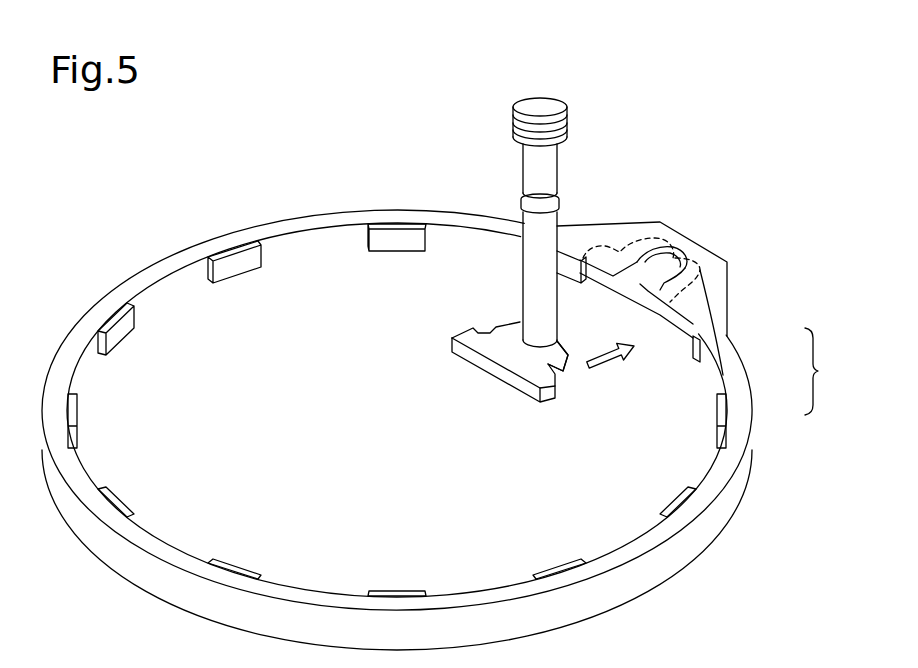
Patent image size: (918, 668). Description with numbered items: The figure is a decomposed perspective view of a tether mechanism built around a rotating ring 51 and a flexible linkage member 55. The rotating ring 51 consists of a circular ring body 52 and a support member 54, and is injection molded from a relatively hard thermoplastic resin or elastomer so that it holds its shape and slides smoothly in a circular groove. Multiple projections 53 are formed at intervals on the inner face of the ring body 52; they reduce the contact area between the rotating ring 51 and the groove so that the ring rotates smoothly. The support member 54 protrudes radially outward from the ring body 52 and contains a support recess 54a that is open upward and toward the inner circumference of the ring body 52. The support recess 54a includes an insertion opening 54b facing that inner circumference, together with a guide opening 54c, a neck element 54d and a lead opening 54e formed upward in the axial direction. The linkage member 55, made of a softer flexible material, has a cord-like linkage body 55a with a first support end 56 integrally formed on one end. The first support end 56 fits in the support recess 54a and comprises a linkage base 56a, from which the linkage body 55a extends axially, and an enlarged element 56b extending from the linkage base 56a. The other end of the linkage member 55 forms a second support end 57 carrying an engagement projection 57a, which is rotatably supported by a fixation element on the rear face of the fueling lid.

The rotating ring 51 is at (829, 371).
The ring body 52 is at (733, 415).
The projections 53 is at (247, 243).
The support member 54 is at (680, 310).
The support recess 54a is at (640, 278).
The insertion opening 54b is at (657, 278).
The guide opening 54c is at (693, 279).
The neck element 54d is at (687, 258).
The lead opening 54e is at (670, 246).
The linkage member 55 is at (492, 279).
The linkage body 55a is at (537, 310).
The first support end 56 is at (506, 386).
The linkage base 56a is at (563, 345).
The enlarged element 56b is at (553, 404).
The second support end 57 is at (502, 138).
The engagement projection 57a is at (511, 122).